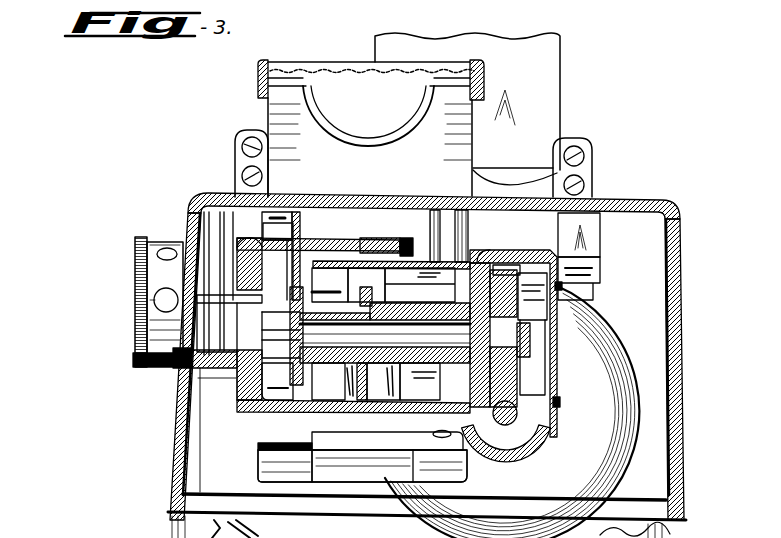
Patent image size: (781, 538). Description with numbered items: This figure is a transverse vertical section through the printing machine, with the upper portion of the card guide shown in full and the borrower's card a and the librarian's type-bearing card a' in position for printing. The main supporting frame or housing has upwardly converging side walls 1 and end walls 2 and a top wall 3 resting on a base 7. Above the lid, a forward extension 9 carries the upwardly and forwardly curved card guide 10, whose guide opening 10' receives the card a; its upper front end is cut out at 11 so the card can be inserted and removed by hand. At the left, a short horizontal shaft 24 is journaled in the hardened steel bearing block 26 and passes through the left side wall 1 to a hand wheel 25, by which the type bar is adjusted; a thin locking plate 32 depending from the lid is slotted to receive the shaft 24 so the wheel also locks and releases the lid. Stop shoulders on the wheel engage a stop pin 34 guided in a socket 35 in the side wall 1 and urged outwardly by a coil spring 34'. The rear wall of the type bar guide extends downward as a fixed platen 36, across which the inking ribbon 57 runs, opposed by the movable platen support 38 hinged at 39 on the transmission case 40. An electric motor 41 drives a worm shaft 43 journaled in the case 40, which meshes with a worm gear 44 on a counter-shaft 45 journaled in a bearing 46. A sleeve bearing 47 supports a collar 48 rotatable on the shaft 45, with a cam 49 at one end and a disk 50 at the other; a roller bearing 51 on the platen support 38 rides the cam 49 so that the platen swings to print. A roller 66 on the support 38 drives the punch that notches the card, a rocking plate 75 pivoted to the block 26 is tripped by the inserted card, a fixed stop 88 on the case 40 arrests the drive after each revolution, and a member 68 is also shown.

The side wall 1 is at (168, 439).
The end wall 2 is at (312, 486).
The top wall 3 is at (626, 201).
The base 7 is at (165, 524).
The forward extension 9 is at (236, 155).
The card guide 10 is at (365, 291).
The guide opening 10' is at (482, 76).
The cut out 11 is at (365, 146).
The horizontal shaft 24 is at (207, 303).
The hand wheel 25 is at (152, 281).
The bearing block 26 is at (272, 230).
The locking plate 32 is at (224, 270).
The stop pin 34 is at (189, 368).
The coil spring 34' is at (217, 430).
The socket 35 is at (217, 327).
The fixed platen 36 is at (600, 238).
The platen support 38 is at (390, 277).
The pivotal pin 39 is at (258, 463).
The transmission case 40 is at (500, 250).
The electric motor 41 is at (512, 412).
The worm shaft 43 is at (506, 431).
The worm gear 44 is at (517, 398).
The counter-shaft 45 is at (388, 381).
The bearing 46 is at (420, 384).
The sleeve bearing 47 is at (360, 384).
The collar 48 is at (328, 381).
The cam 49 is at (382, 298).
The disk 50 is at (290, 372).
The roller bearing 51 is at (370, 289).
The inking ribbon 57 is at (600, 268).
The roller 66 is at (276, 333).
The flange 68 is at (286, 336).
The rocking plate 75 is at (293, 233).
The fixed stop 88 is at (330, 285).
The card a is at (372, 292).
The type-bearing card a' is at (548, 285).